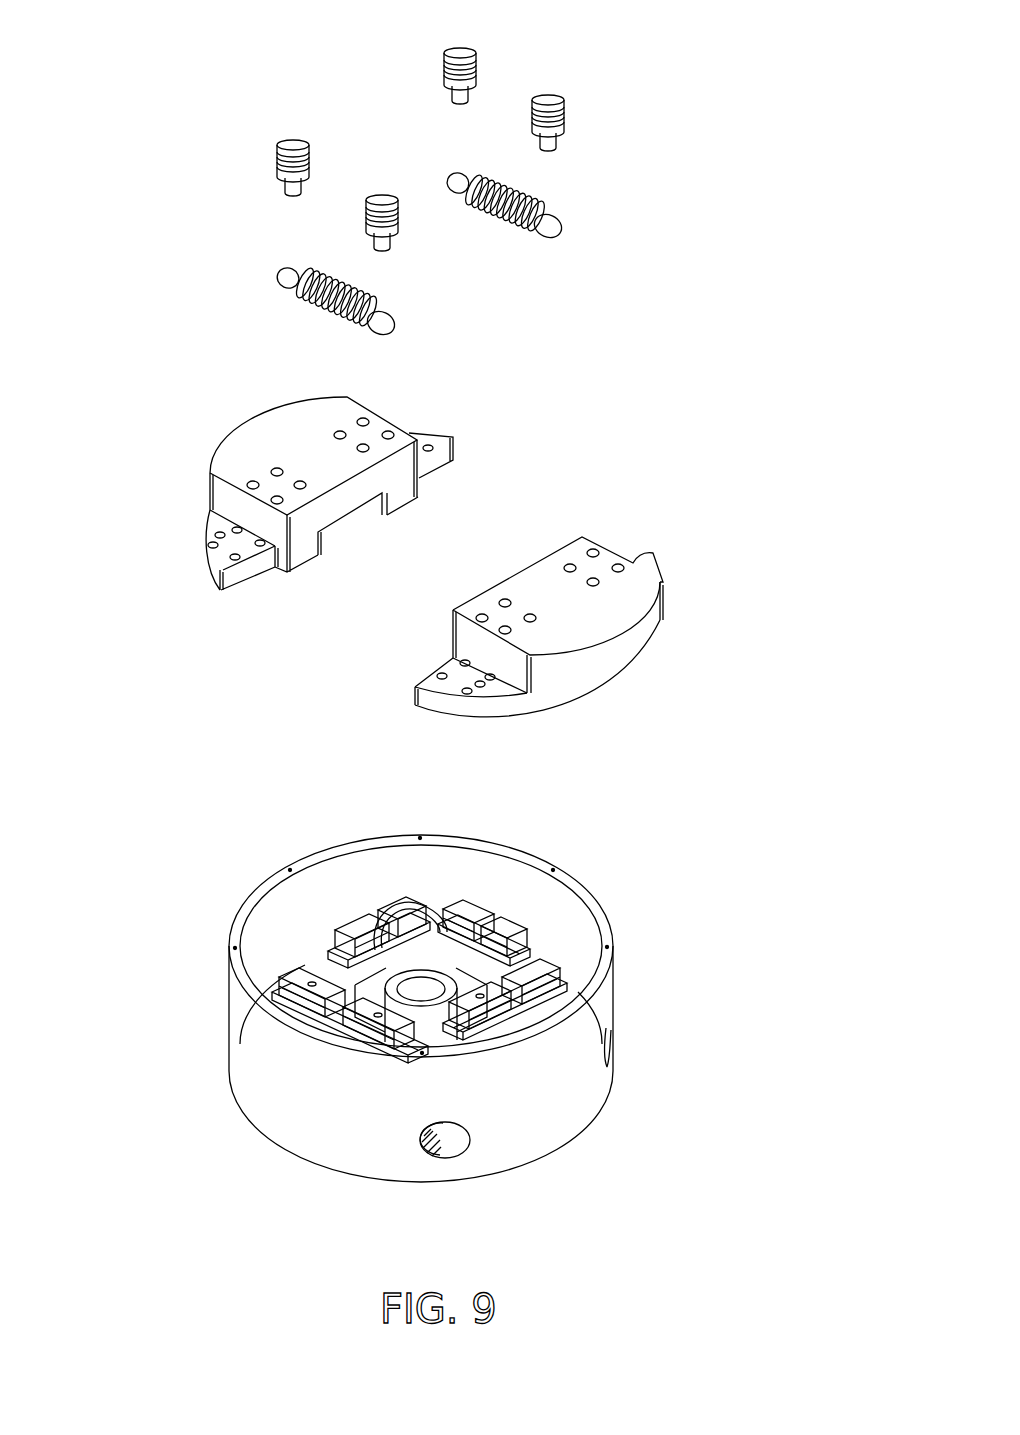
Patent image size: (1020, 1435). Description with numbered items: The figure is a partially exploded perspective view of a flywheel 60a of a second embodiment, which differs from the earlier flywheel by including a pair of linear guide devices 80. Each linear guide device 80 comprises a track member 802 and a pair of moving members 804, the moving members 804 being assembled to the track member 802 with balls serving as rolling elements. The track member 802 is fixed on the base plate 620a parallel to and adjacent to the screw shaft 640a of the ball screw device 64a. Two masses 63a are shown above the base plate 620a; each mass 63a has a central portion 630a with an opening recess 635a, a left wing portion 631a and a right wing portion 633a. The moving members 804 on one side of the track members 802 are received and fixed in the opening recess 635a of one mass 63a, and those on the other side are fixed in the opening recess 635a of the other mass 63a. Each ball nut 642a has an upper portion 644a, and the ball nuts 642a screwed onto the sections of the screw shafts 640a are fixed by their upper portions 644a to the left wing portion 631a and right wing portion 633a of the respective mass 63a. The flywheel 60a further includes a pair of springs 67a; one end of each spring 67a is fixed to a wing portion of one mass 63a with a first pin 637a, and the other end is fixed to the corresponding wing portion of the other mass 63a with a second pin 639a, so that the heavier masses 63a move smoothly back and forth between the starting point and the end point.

The flywheel 60a is at (168, 243).
The first pin 637a is at (290, 147).
The second pin 639a is at (383, 200).
The spring 67a is at (540, 200).
The mass 63a is at (240, 419).
The central portion 630a is at (328, 418).
The right wing portion 633a is at (425, 447).
The opening recess 635a is at (355, 522).
The left wing portion 631a is at (223, 567).
The base plate 620a is at (317, 987).
The screw shaft 640a is at (436, 910).
The ball screw device 64a is at (494, 914).
The upper portion 644a is at (466, 920).
The ball nut 642a is at (598, 960).
The linear guide device 80 is at (128, 1085).
The track member 802 is at (345, 945).
The moving member 804 is at (413, 920).